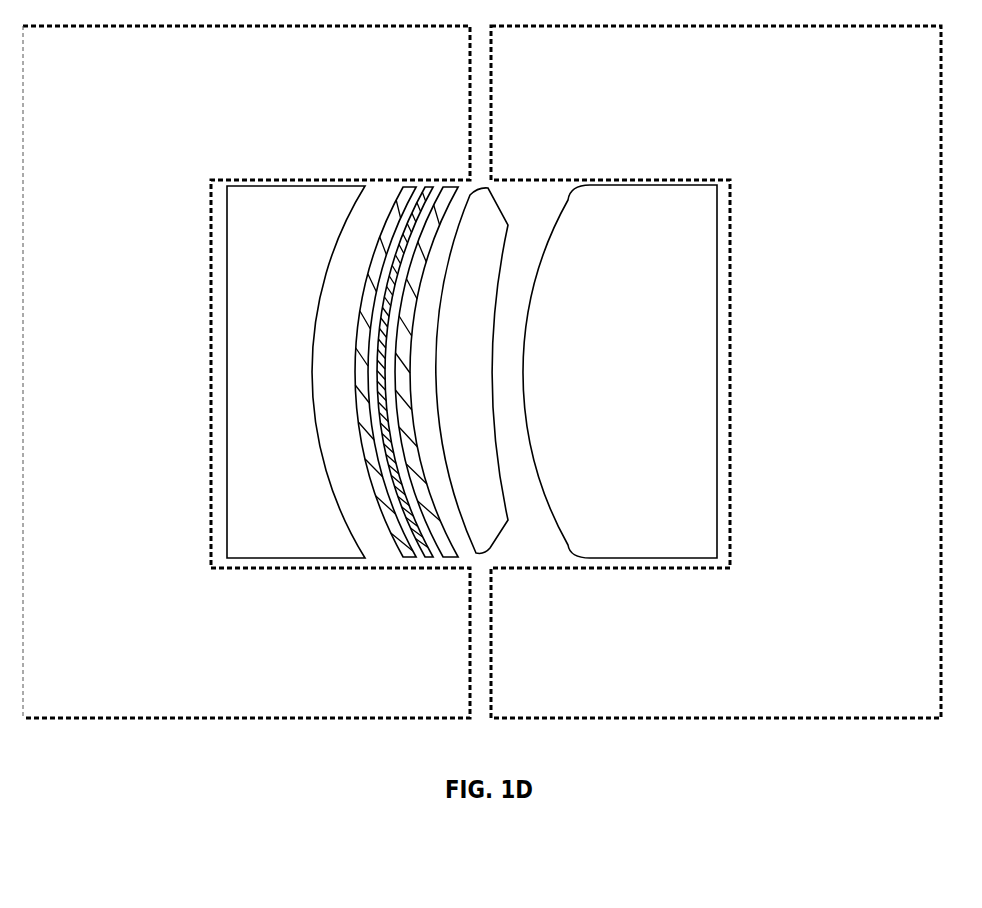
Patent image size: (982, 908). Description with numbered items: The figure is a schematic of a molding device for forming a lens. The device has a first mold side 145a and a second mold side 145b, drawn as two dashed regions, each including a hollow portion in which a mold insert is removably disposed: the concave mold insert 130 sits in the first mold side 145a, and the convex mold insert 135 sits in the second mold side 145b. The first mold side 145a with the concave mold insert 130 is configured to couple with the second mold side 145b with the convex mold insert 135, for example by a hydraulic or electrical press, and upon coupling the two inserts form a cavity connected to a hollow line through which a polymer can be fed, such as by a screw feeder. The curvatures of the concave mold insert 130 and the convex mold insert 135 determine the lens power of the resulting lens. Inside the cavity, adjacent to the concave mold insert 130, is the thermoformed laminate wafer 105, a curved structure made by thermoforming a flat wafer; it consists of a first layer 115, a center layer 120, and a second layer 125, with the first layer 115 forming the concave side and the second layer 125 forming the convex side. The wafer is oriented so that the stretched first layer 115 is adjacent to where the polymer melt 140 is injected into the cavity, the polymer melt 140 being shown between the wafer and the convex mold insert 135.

The thermoformed laminate wafer 105 is at (452, 181).
The first layer 115 is at (440, 543).
The center layer 120 is at (412, 540).
The second layer 125 is at (373, 500).
The concave mold insert 130 is at (240, 500).
The convex mold insert 135 is at (702, 498).
The polymer melt 140 is at (493, 523).
The first mold side 145a is at (178, 693).
The second mold side 145b is at (827, 695).